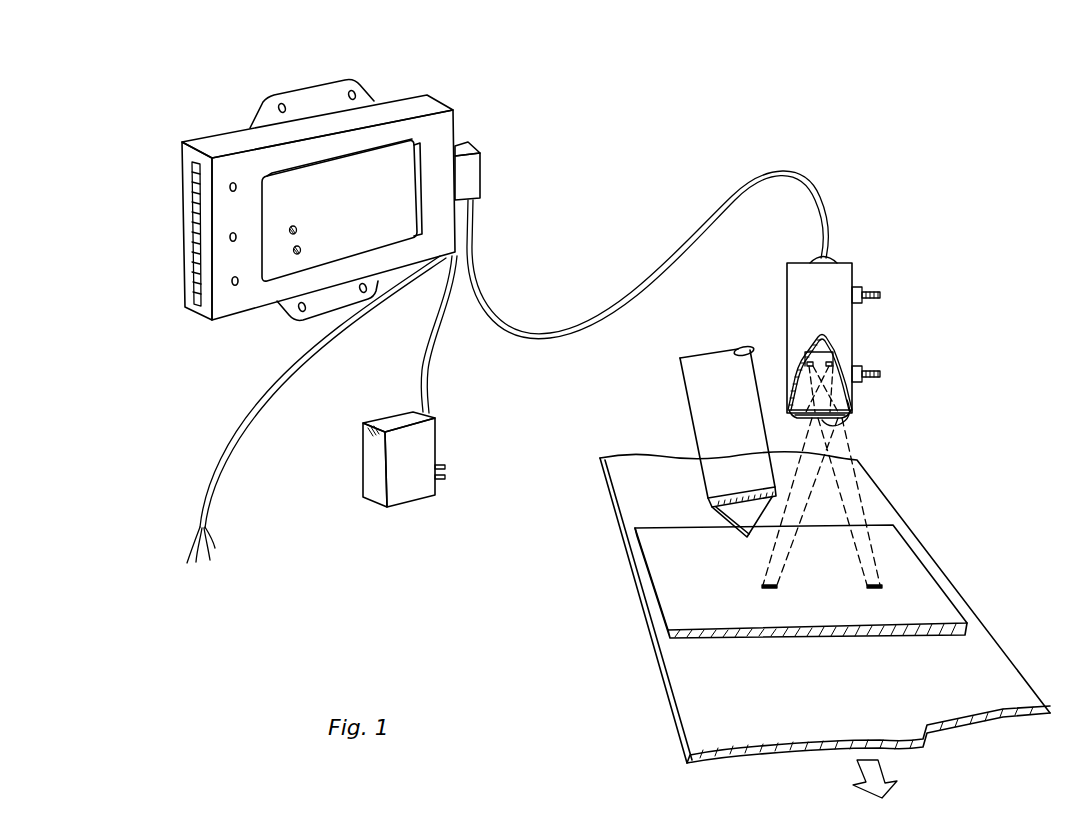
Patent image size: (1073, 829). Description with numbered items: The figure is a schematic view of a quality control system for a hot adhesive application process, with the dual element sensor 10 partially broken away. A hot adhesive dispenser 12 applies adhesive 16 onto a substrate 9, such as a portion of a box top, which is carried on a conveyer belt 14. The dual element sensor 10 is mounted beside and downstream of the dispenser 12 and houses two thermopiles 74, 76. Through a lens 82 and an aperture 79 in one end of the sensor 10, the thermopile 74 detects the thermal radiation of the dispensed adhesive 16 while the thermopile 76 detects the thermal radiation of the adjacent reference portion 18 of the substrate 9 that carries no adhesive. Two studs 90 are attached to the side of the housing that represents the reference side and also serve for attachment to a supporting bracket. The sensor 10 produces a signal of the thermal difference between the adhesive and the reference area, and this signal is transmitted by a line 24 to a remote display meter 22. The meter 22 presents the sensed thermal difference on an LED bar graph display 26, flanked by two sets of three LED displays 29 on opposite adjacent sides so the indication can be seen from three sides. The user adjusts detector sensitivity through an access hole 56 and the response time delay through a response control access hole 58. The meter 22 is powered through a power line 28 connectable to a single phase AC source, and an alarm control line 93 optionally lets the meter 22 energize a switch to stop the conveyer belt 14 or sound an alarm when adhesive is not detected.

The substrate 9 is at (867, 637).
The dual element sensor 10 is at (855, 273).
The hot adhesive dispenser 12 is at (742, 437).
The conveyer belt 14 is at (808, 712).
The adhesive 16 is at (747, 540).
The reference portion 18 is at (883, 586).
The remote display meter 22 is at (403, 100).
The line 24 is at (607, 310).
The LED bar graph display 26 is at (197, 197).
The power line 28 is at (427, 367).
The LED displays 29 is at (235, 292).
The access hole 56 is at (296, 228).
The response control access hole 58 is at (301, 250).
The thermopile 74 is at (834, 364).
The thermopile 76 is at (803, 353).
The aperture 79 is at (835, 427).
The lens 82 is at (856, 403).
The studs 90 is at (880, 295).
The alarm control line 93 is at (242, 425).